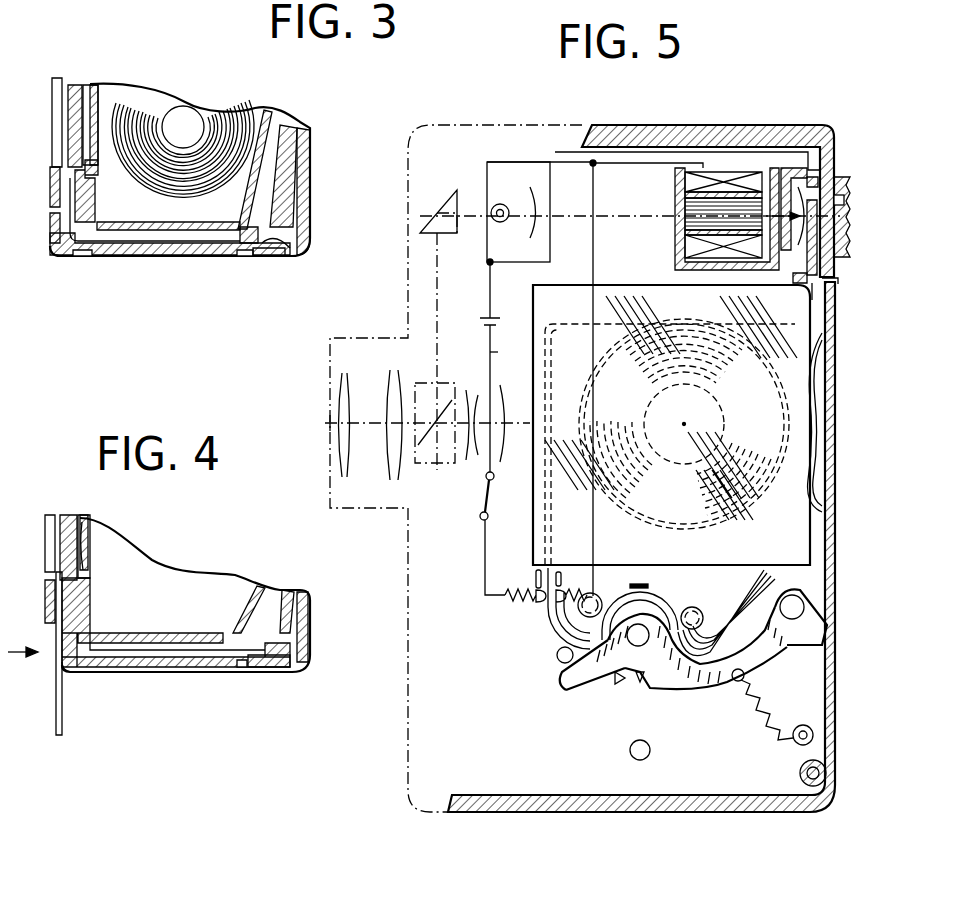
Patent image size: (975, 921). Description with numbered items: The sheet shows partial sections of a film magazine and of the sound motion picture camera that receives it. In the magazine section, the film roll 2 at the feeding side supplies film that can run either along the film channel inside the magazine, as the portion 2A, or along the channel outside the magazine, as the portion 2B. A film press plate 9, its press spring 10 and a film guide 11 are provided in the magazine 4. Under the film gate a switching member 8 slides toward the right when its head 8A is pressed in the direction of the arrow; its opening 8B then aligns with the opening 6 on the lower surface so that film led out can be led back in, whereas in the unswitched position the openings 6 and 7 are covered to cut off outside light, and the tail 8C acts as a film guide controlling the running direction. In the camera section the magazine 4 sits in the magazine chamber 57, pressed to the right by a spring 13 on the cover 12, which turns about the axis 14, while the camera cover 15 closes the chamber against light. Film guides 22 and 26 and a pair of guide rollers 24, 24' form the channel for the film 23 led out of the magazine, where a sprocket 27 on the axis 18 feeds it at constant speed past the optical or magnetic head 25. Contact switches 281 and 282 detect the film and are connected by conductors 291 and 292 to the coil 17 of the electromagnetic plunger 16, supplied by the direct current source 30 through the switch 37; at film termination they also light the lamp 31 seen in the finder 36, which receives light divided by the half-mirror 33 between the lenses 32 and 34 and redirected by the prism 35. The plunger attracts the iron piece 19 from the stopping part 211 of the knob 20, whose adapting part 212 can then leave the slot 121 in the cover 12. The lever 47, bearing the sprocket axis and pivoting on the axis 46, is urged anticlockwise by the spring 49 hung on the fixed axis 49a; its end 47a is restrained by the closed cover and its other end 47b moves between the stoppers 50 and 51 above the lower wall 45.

In FIG. 3, the film roll at feeding side 2 is at (60, 125).
In FIG. 4, the film roll at feeding side 2 is at (48, 552).
In FIG. 3, the film running along the film channel inside of the magazine 2A is at (140, 238).
In FIG. 4, the film running along the film channel outside of the magazine 2B is at (63, 722).
In FIG. 3, the magazine 4 is at (311, 150).
In FIG. 5, the magazine 4 is at (792, 425).
In FIG. 3, the opening on the lower surface of the magazine 6 is at (245, 260).
In FIG. 4, the opening on the lower surface of the magazine 6 is at (242, 672).
In FIG. 3, the opening on the lower surface of the magazine 7 is at (80, 256).
In FIG. 3, the switching member 8 is at (150, 256).
In FIG. 3, the head of the switching member 8A is at (55, 256).
In FIG. 4, the head of the switching member 8A is at (75, 672).
In FIG. 3, the opening of the switching member 8B is at (228, 256).
In FIG. 4, the opening of the switching member 8B is at (240, 642).
In FIG. 3, the tail of the magazine 8C is at (262, 242).
In FIG. 3, the film press plate 9 is at (75, 85).
In FIG. 3, the press spring 10 is at (91, 95).
In FIG. 3, the film guide 11 is at (290, 125).
In FIG. 5, the cover of the magazine chamber 12 is at (838, 568).
In FIG. 5, the spring 13 is at (826, 490).
In FIG. 5, the axis 14 is at (800, 773).
In FIG. 5, the camera cover 15 is at (826, 138).
In FIG. 5, the electromagnetic plunger 16 is at (698, 214).
In FIG. 5, the coil 17 is at (712, 172).
In FIG. 5, the axis of the sprocket 18 is at (650, 676).
In FIG. 5, the iron piece 19 is at (786, 168).
In FIG. 5, the slidable knob 20 is at (852, 201).
In FIG. 5, the film guide 22 is at (575, 635).
In FIG. 5, the film 23 is at (540, 575).
In FIG. 5, the guide roller 24 is at (603, 575).
In FIG. 5, the guide roller 24' is at (690, 598).
In FIG. 5, the optical or magnetic head 25 is at (643, 582).
In FIG. 5, the film guide 26 is at (765, 582).
In FIG. 5, the sprocket 27 is at (638, 682).
In FIG. 5, the electric source for direct current 30 is at (490, 321).
In FIG. 5, the lamp 31 is at (508, 208).
In FIG. 5, the photographing lens 32 is at (390, 450).
In FIG. 5, the half-mirror 33 is at (437, 463).
In FIG. 5, the photographing lens 34 is at (498, 450).
In FIG. 5, the prism 35 is at (432, 220).
In FIG. 5, the finder 36 is at (835, 260).
In FIG. 5, the switch for the electrical source 37 is at (490, 512).
In FIG. 5, the lower wall of the camera 45 is at (700, 813).
In FIG. 5, the axis 46 is at (792, 595).
In FIG. 5, the lever 47 is at (700, 686).
In FIG. 5, the end of the lever 47a is at (828, 620).
In FIG. 5, the other end of the lever 47b is at (577, 690).
In FIG. 5, the spring 49 is at (768, 725).
In FIG. 5, the fixed axis 49a is at (803, 725).
In FIG. 5, the stopper 50 is at (562, 663).
In FIG. 5, the stopper 51 is at (630, 752).
In FIG. 5, the magazine chamber 57 is at (563, 760).
In FIG. 5, the slot in the cover 121 is at (838, 290).
In FIG. 5, the stopping part of the knob 211 is at (818, 180).
In FIG. 5, the adapting part of the knob 212 is at (812, 286).
In FIG. 5, the contact switch 281 is at (538, 600).
In FIG. 5, the contact switch 282 is at (560, 625).
In FIG. 5, the conductor 291 is at (490, 352).
In FIG. 5, the conductor 292 is at (598, 425).